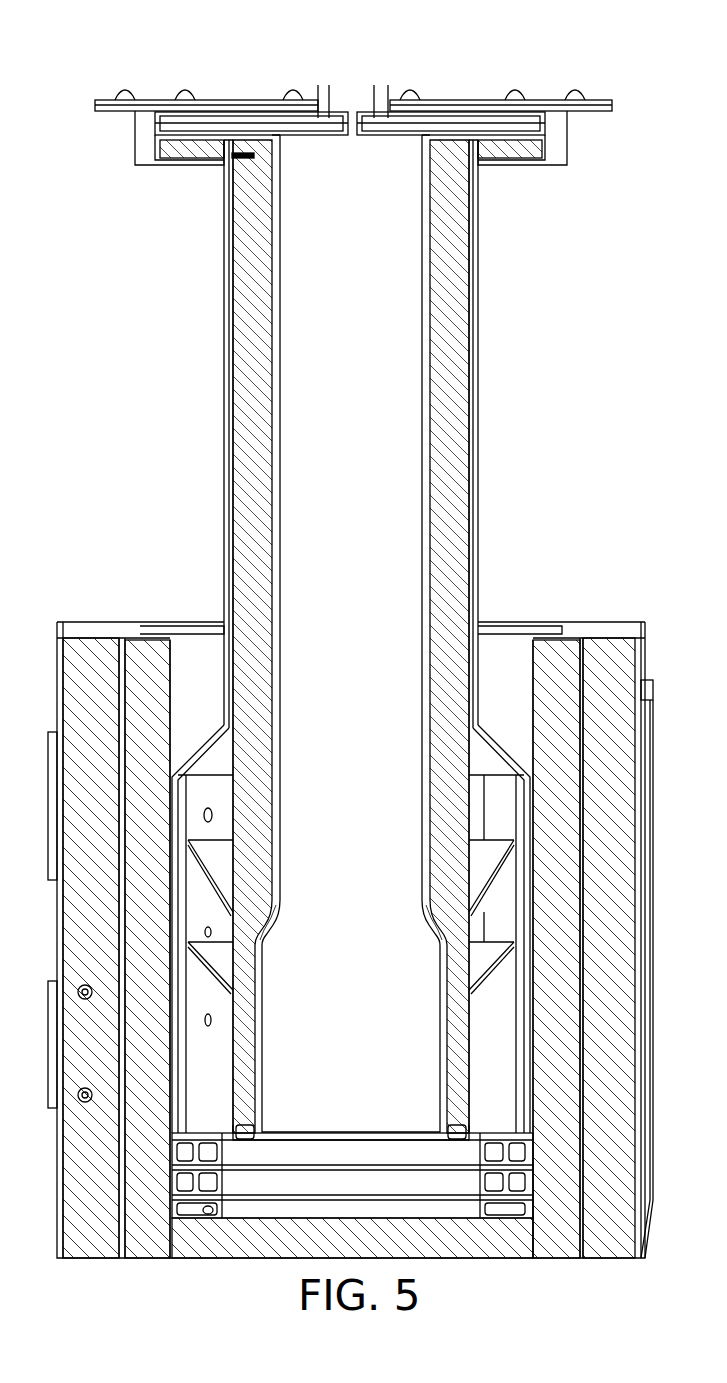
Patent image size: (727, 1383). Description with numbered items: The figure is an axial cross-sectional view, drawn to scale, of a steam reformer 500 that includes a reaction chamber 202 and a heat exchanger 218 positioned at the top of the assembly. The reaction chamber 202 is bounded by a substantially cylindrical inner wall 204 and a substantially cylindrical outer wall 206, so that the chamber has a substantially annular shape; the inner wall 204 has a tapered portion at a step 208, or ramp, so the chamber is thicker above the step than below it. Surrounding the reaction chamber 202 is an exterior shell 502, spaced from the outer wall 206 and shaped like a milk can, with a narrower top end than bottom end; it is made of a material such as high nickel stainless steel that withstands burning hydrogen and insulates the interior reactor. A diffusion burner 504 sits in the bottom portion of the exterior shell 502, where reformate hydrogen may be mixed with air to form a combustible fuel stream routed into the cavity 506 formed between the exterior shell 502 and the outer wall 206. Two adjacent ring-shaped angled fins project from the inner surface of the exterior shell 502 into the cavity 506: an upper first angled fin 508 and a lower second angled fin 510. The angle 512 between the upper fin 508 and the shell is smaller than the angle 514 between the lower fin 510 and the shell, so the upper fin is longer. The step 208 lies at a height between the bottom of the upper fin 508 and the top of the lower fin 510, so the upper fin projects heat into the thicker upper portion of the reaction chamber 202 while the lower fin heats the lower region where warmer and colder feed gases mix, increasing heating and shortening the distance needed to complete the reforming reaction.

The reformer 500 is at (607, 52).
The heat exchanger 218 is at (430, 116).
The inner wall 204 is at (275, 662).
The outer wall 206 is at (232, 706).
The exterior shell 502 is at (198, 752).
The reaction chamber 202 is at (272, 831).
The step 208 is at (268, 923).
The first angled fin 508 is at (484, 880).
The second angled fin 510 is at (484, 966).
The angle 512 is at (187, 888).
The angle 514 is at (190, 975).
The cavity 506 is at (514, 1056).
The diffusion burner 504 is at (186, 1208).